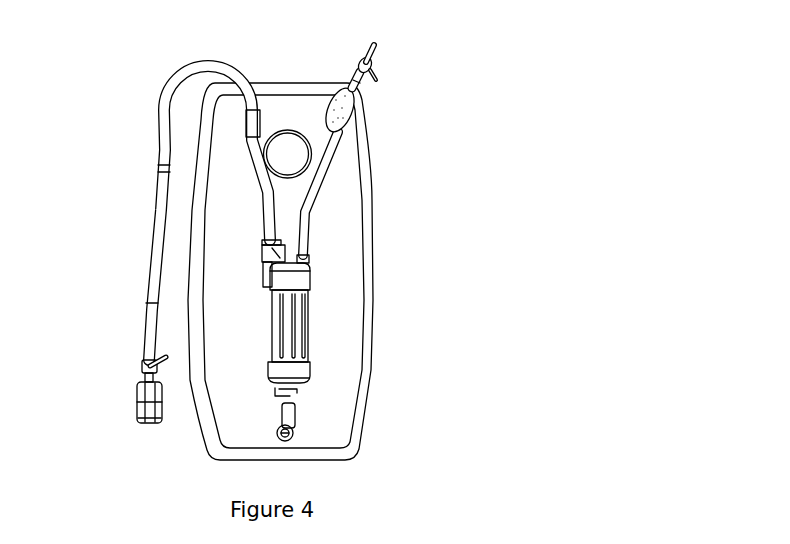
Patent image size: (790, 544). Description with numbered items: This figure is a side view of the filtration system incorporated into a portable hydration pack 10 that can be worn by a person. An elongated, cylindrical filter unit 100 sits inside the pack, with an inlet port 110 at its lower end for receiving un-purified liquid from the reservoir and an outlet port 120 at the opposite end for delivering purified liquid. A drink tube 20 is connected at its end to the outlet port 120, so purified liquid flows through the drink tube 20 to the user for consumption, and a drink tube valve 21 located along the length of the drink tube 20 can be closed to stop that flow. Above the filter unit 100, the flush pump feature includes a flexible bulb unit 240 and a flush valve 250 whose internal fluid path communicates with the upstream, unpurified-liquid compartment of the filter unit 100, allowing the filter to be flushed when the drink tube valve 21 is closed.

The hydration pack 10 is at (373, 203).
The drink tube 20 is at (157, 218).
The drink tube valve 21 is at (143, 367).
The filter unit 100 is at (292, 328).
The inlet port 110 is at (290, 415).
The outlet port 120 is at (262, 256).
The flexible bulb unit 240 is at (350, 113).
The flush valve 250 is at (367, 63).